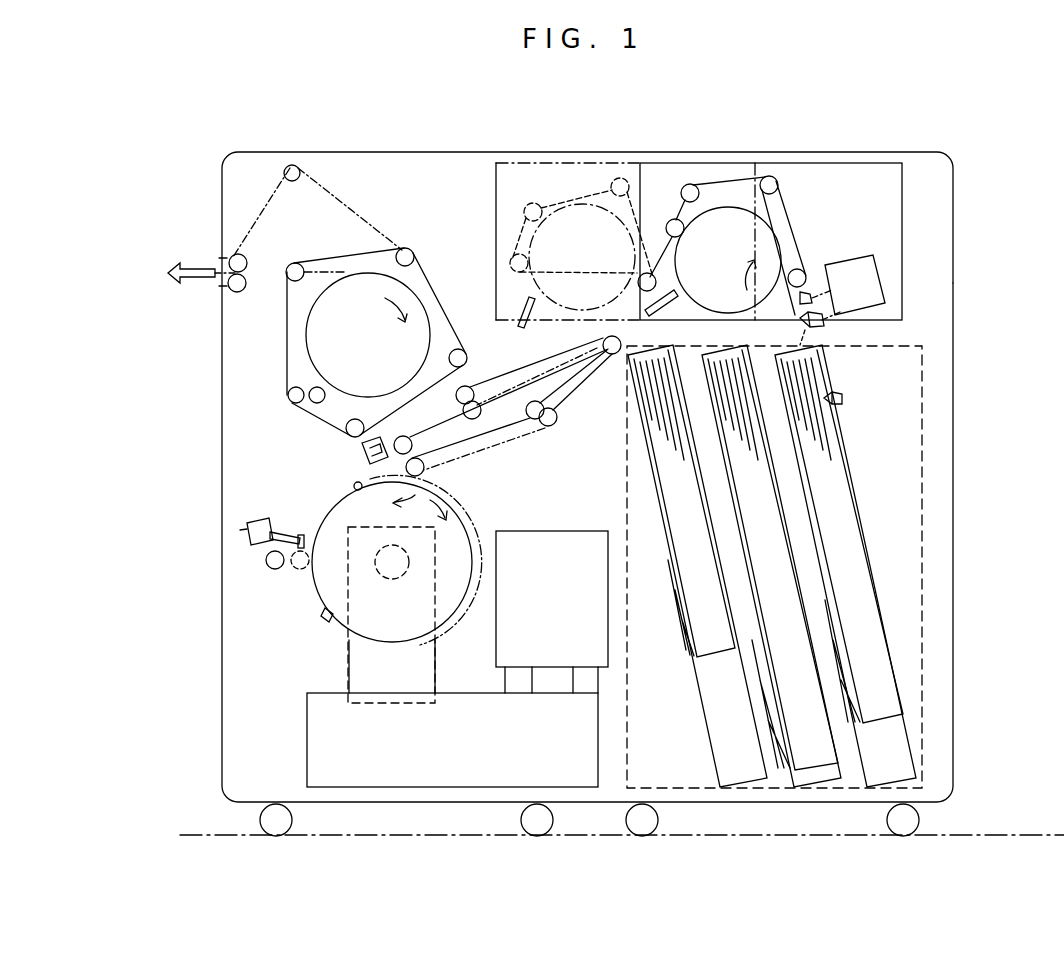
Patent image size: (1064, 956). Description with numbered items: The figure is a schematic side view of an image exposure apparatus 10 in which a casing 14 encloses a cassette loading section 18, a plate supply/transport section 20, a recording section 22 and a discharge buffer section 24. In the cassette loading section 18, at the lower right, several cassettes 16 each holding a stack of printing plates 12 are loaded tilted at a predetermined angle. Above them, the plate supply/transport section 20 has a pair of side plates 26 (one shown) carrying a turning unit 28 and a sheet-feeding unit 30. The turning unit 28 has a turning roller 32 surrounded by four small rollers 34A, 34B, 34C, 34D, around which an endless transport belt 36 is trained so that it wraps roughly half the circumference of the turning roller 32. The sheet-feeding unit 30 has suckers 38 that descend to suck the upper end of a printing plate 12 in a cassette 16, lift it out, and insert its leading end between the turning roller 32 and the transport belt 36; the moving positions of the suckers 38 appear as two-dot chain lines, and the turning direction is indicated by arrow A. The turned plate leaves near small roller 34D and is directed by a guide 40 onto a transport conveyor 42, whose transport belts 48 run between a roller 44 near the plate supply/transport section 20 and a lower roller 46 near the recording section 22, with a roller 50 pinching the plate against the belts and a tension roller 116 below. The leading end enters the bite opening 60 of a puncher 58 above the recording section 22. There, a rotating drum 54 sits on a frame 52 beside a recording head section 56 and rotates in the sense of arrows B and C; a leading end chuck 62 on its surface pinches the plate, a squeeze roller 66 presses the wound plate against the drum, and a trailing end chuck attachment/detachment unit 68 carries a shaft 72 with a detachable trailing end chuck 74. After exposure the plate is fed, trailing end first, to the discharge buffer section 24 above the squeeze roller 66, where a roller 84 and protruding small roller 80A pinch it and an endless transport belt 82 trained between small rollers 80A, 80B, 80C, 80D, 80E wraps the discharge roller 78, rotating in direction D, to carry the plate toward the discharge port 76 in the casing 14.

The image exposure apparatus 10 is at (1000, 125).
The printing plate 12 is at (800, 340).
The casing 14 is at (953, 283).
The cassette 16 is at (868, 525).
The cassette loading section 18 is at (938, 428).
The plate supply/transport section 20 is at (920, 168).
The recording section 22 is at (302, 614).
The discharge buffer section 24 is at (437, 175).
The side plate 26 is at (497, 165).
The turning unit 28 is at (583, 163).
The sheet-feeding unit 30 is at (885, 262).
The turning roller 32 is at (578, 215).
The small roller 34A is at (815, 252).
The small roller 34B is at (626, 178).
The small roller 34C is at (524, 210).
The small roller 34D is at (510, 265).
The transport belt 36 is at (505, 243).
The sucker 38 is at (815, 300).
The guide 40 is at (663, 318).
The transport conveyor 42 is at (510, 344).
The roller 44 is at (621, 345).
The roller 46 is at (410, 438).
The transport belt 48 is at (515, 380).
The roller 50 is at (475, 392).
The frame 52 is at (460, 700).
The rotating drum 54 is at (488, 525).
The recording head section 56 is at (580, 538).
The puncher 58 is at (365, 458).
The bite opening 60 is at (365, 449).
The leading end chuck 62 is at (352, 486).
The squeeze roller 66 is at (270, 568).
The trailing end chuck attachment/detachment unit 68 is at (258, 518).
The shaft 72 is at (275, 530).
The trailing end chuck 74 is at (301, 535).
The discharge port 76 is at (220, 258).
The discharge roller 78 is at (408, 295).
The small roller 80A is at (245, 262).
The small roller 80B is at (300, 168).
The small roller 80C is at (407, 250).
The small roller 80D is at (460, 349).
The small roller 80E is at (360, 420).
The transport belt 82 is at (355, 205).
The roller 84 is at (238, 292).
The tension roller 116 is at (557, 417).
The rotation direction A is at (741, 283).
The rotation direction B is at (386, 508).
The rotation direction C is at (456, 502).
The rotation direction D is at (372, 304).